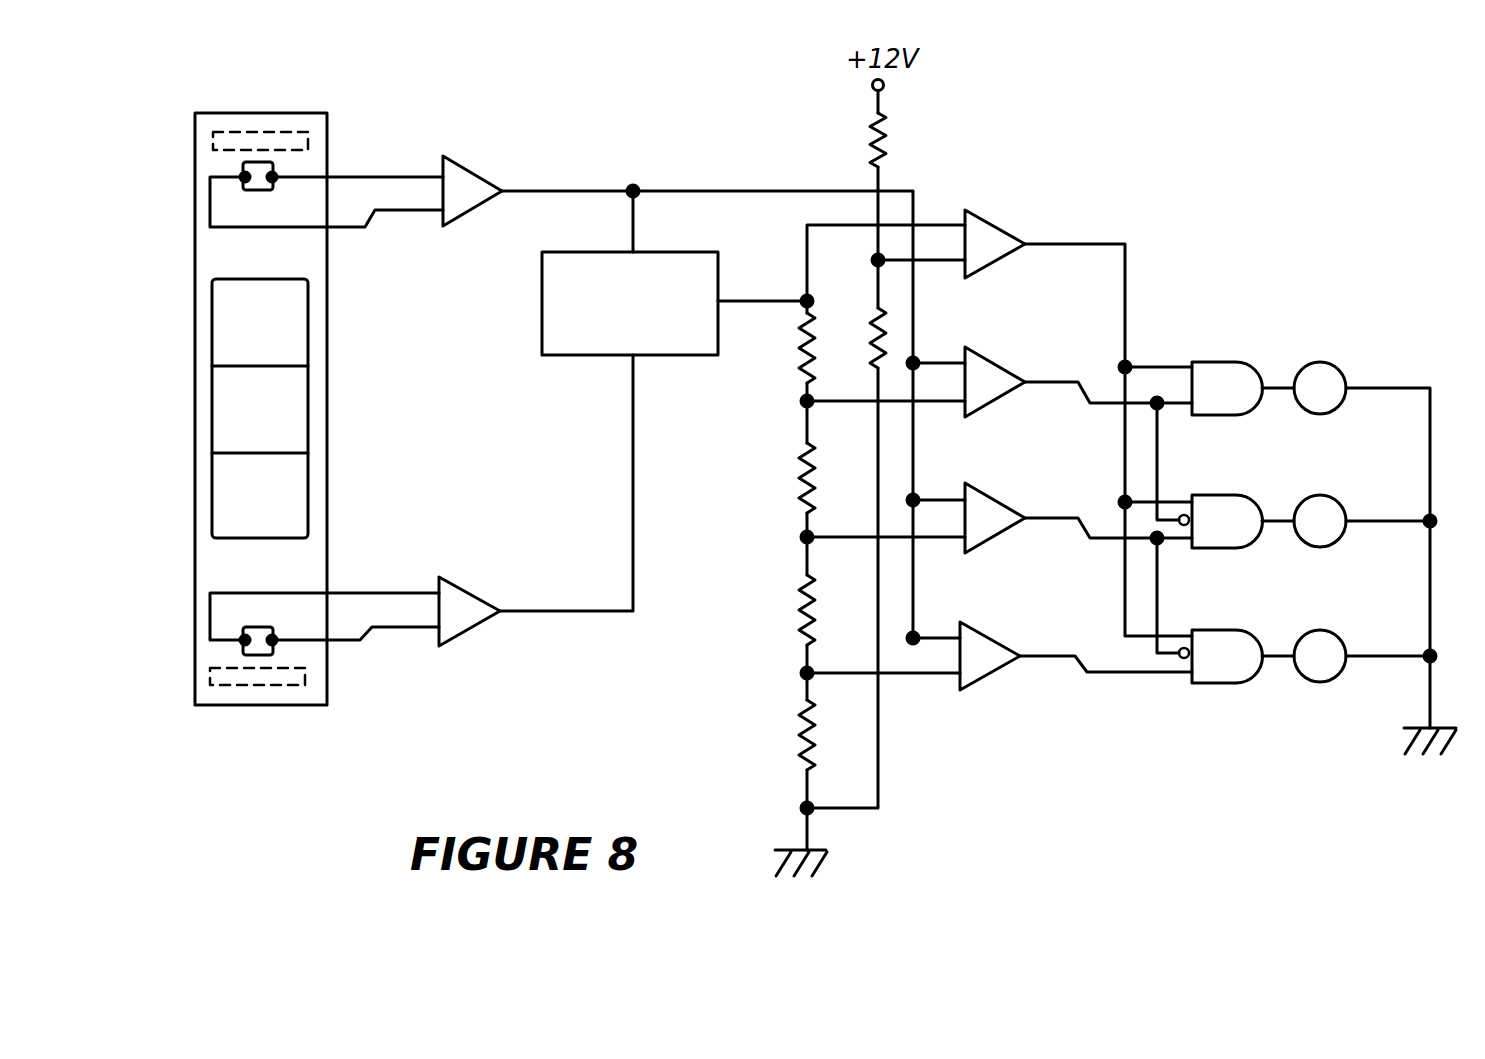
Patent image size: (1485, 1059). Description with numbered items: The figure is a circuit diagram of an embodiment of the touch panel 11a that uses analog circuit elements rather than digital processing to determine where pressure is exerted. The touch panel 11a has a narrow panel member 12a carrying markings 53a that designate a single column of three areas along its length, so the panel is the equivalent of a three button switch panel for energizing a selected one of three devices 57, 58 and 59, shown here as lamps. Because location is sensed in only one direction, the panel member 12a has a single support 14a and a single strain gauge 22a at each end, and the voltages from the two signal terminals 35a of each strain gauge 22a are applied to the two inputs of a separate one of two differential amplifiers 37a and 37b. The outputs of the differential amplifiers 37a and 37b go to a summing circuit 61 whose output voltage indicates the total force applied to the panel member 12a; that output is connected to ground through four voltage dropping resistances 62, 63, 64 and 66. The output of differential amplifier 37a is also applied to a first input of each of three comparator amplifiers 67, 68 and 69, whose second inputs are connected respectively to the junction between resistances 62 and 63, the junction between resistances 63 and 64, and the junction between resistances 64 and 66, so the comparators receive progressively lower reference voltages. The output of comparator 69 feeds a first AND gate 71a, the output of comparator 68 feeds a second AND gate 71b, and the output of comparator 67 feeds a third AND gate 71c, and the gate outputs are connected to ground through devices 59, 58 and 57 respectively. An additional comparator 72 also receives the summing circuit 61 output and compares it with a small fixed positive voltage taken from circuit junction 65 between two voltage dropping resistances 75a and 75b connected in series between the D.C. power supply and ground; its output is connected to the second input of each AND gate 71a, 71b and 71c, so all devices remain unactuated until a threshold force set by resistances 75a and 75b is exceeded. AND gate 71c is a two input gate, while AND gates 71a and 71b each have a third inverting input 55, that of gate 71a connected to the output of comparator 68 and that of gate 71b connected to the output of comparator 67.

The touch panel 11a is at (990, 168).
The panel member 12a is at (328, 257).
The support 14a is at (248, 133).
The strain gauge 22a is at (258, 192).
The signal terminals 35a is at (245, 175).
The differential amplifier 37a is at (468, 176).
The differential amplifier 37b is at (465, 589).
The markings 53a is at (285, 342).
The inverting input 55 is at (1176, 536).
The device 57 is at (1340, 368).
The device 58 is at (1340, 504).
The device 59 is at (1340, 639).
The summing circuit 61 is at (571, 356).
The voltage dropping resistance 62 is at (800, 350).
The voltage dropping resistance 63 is at (800, 468).
The voltage dropping resistance 64 is at (800, 600).
The circuit junction 65 is at (876, 262).
The voltage dropping resistance 66 is at (800, 736).
The comparator amplifier 67 is at (998, 369).
The comparator amplifier 68 is at (995, 501).
The comparator amplifier 69 is at (990, 640).
The first AND gate 71a is at (1240, 630).
The second AND gate 71b is at (1228, 495).
The third AND gate 71c is at (1218, 362).
The additional comparator 72 is at (992, 230).
The voltage dropping resistance 75a is at (872, 128).
The voltage dropping resistance 75b is at (893, 336).